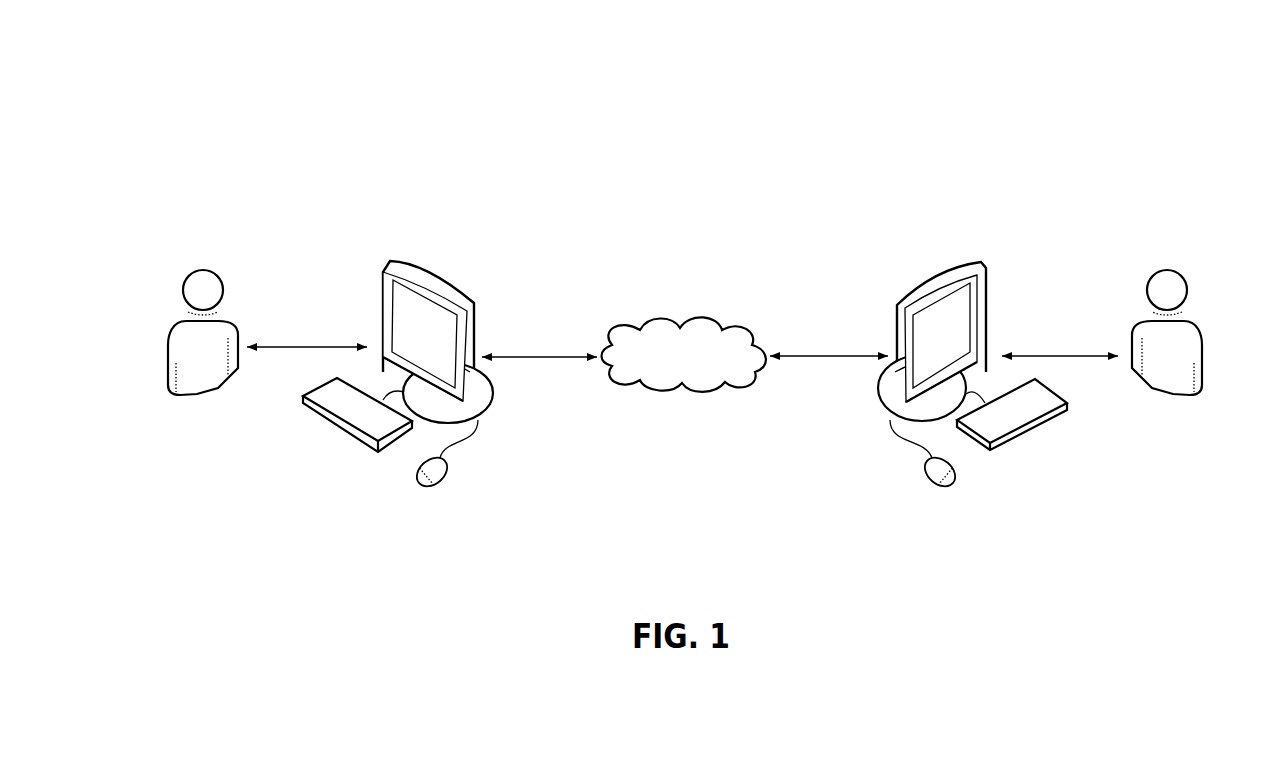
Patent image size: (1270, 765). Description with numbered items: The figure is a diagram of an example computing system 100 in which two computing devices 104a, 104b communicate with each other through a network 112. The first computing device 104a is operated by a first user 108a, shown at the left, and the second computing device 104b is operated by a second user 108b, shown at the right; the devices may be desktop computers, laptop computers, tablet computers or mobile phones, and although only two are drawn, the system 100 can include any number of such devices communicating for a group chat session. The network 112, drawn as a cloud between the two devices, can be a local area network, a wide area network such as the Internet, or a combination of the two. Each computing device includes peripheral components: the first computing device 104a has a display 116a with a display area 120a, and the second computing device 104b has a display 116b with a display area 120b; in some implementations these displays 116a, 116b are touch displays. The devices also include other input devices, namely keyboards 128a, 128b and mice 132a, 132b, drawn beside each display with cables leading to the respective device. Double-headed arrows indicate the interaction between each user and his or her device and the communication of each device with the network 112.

The computing system 100 is at (161, 62).
The computing device 104a is at (429, 373).
The computing device 104b is at (942, 371).
The user 108a is at (202, 266).
The user 108b is at (1168, 266).
The network 112 is at (686, 320).
The display 116a is at (383, 278).
The display 116b is at (1000, 276).
The display area 120a is at (458, 327).
The display area 120b is at (913, 328).
The keyboard 128a is at (337, 428).
The keyboard 128b is at (1035, 428).
The first mouse 132a is at (458, 470).
The second mouse 132b is at (928, 484).